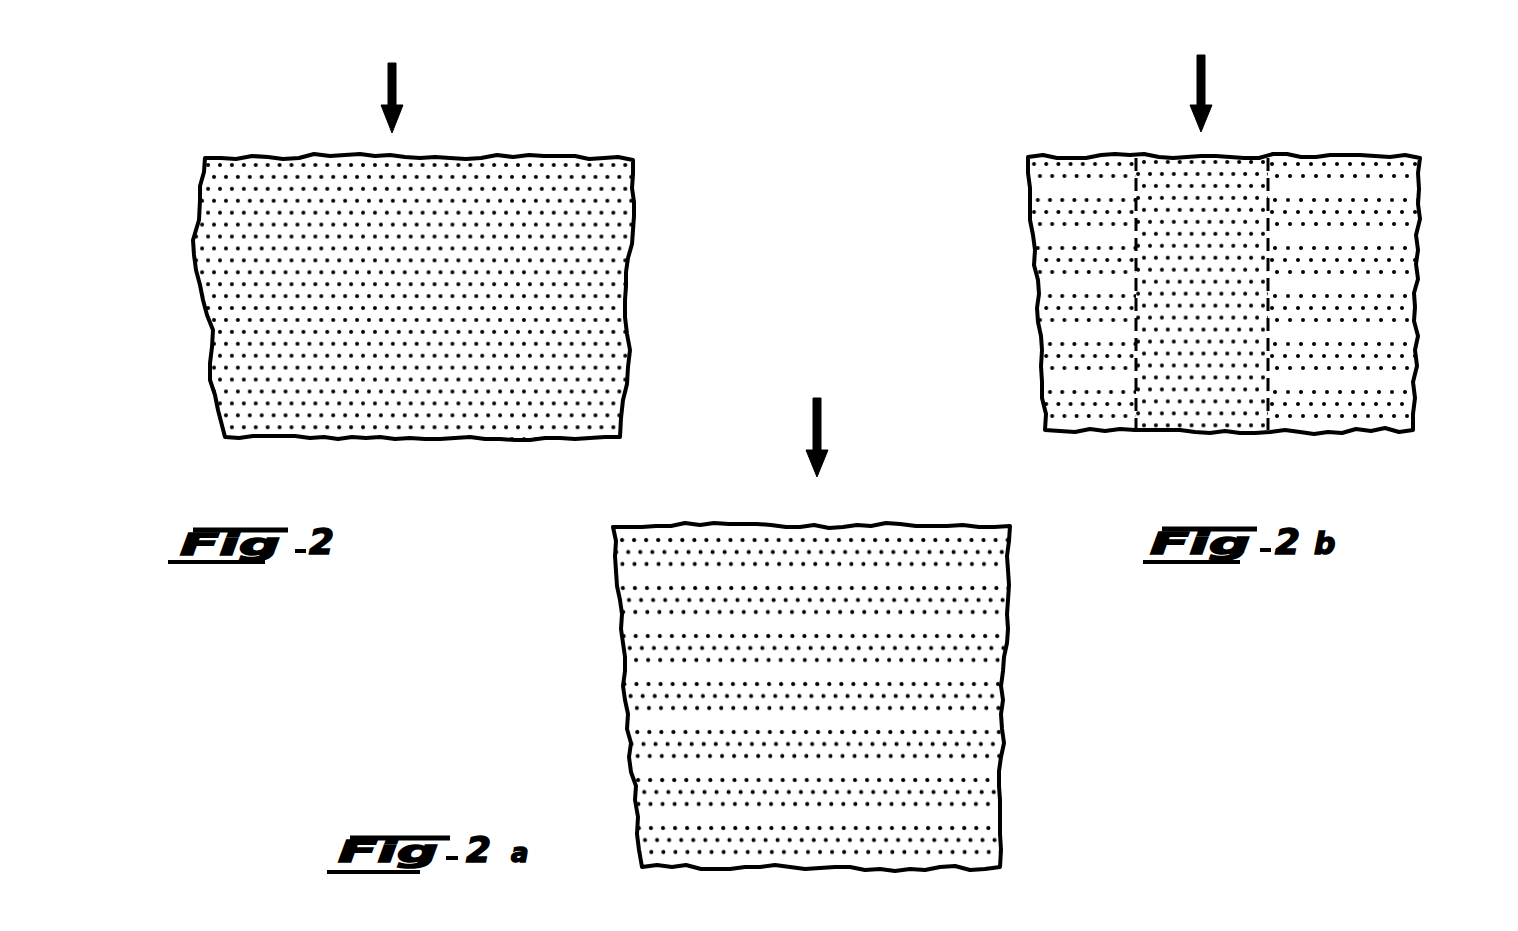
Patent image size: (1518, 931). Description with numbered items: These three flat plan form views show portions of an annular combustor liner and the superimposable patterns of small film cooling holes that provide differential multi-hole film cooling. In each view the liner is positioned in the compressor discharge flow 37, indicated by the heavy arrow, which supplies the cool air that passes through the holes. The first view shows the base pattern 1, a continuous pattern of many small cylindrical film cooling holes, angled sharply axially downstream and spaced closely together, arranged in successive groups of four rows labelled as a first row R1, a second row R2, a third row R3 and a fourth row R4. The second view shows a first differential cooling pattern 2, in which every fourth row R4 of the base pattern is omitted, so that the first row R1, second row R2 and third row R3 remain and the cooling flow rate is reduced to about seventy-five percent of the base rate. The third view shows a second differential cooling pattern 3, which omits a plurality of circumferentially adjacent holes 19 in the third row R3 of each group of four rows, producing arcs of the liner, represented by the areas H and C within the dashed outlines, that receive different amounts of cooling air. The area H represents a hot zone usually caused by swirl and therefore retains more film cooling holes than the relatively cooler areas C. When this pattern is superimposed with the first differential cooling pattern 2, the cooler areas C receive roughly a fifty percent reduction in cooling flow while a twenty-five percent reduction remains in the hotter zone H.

In FIG. 2, the base pattern 1 is at (615, 228).
In FIG. 2A, the first differential cooling pattern 2 is at (970, 668).
In FIG. 2B, the second differential cooling pattern 3 is at (1058, 283).
In FIG. 2B, the circumferentially adjacent holes 19 is at (1405, 230).
In FIG. 2, the compressor discharge flow 37 is at (397, 78).
In FIG. 2A, the compressor discharge flow 37 is at (822, 412).
In FIG. 2B, the compressor discharge flow 37 is at (1206, 72).
In FIG. 2, the first row R1 is at (205, 162).
In FIG. 2A, the first row R1 is at (1007, 528).
In FIG. 2B, the first row R1 is at (1028, 158).
In FIG. 2, the second row R2 is at (207, 164).
In FIG. 2A, the second row R2 is at (997, 550).
In FIG. 2B, the second row R2 is at (1025, 165).
In FIG. 2, the third row R3 is at (213, 187).
In FIG. 2A, the third row R3 is at (1000, 562).
In FIG. 2B, the third row R3 is at (1040, 190).
In FIG. 2, the fourth row R4 is at (203, 203).
In FIG. 2A, the fourth row R4 is at (997, 575).
In FIG. 2B, the fourth row R4 is at (1033, 202).